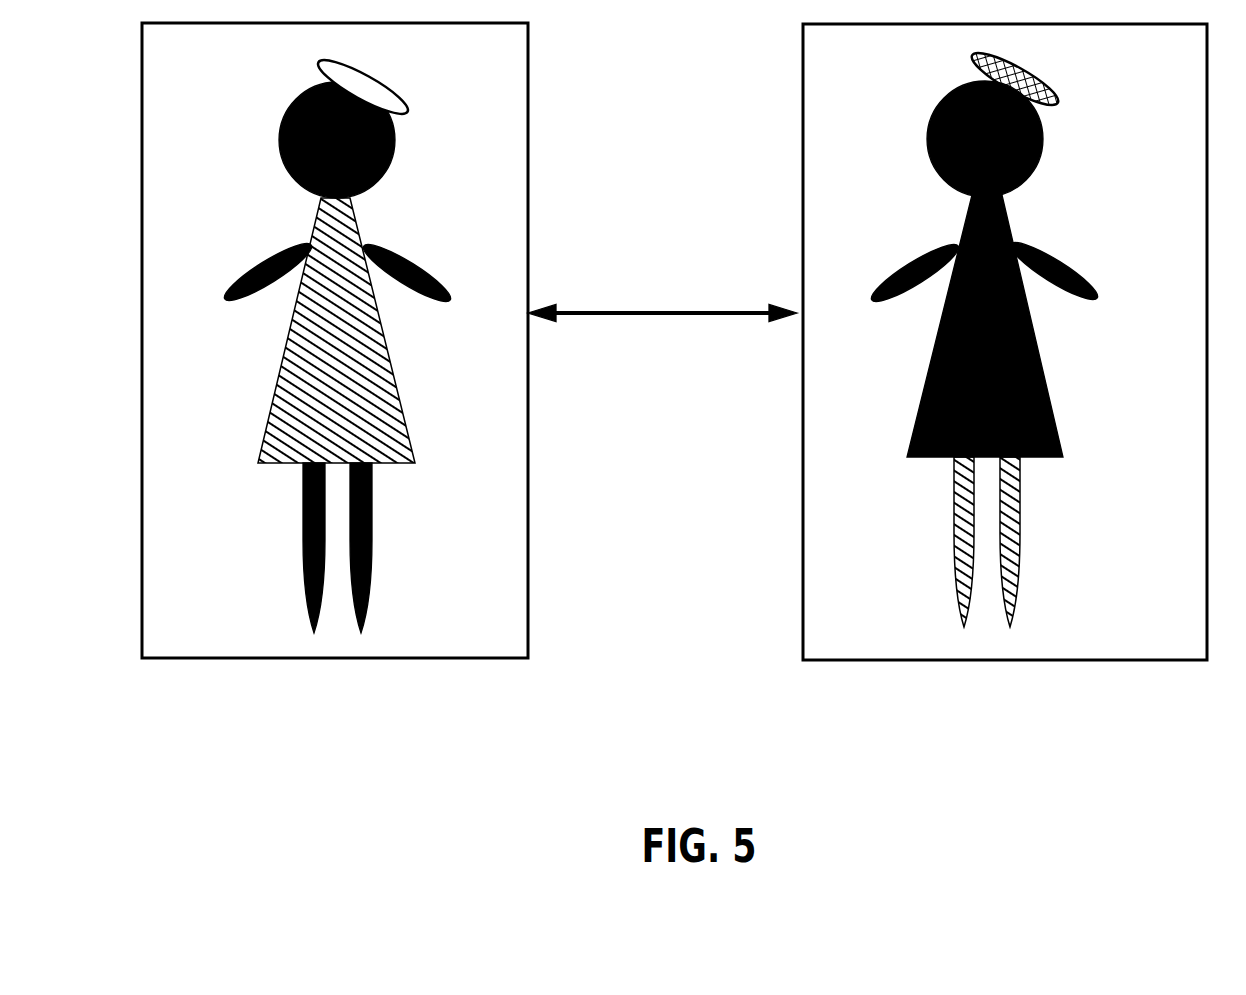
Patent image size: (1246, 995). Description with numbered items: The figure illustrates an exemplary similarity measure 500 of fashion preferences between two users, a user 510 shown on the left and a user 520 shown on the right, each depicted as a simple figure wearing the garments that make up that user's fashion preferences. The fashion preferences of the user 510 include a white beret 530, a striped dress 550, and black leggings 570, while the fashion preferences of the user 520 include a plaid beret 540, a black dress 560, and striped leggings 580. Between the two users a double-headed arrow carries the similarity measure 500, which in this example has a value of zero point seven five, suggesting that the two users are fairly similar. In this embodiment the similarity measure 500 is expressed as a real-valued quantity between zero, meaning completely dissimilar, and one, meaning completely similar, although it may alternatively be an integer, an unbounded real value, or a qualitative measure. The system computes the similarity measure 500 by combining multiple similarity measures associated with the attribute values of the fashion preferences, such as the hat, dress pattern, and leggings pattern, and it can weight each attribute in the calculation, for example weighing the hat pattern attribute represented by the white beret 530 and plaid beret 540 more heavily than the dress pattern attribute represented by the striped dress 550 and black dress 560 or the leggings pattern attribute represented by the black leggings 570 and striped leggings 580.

The similarity measure 500 is at (680, 280).
The user 510 is at (335, 394).
The user 520 is at (1005, 396).
The white beret 530 is at (367, 60).
The plaid beret 540 is at (1024, 66).
The striped dress 550 is at (302, 313).
The black dress 560 is at (1032, 313).
The black leggings 570 is at (303, 497).
The striped leggings 580 is at (1022, 497).